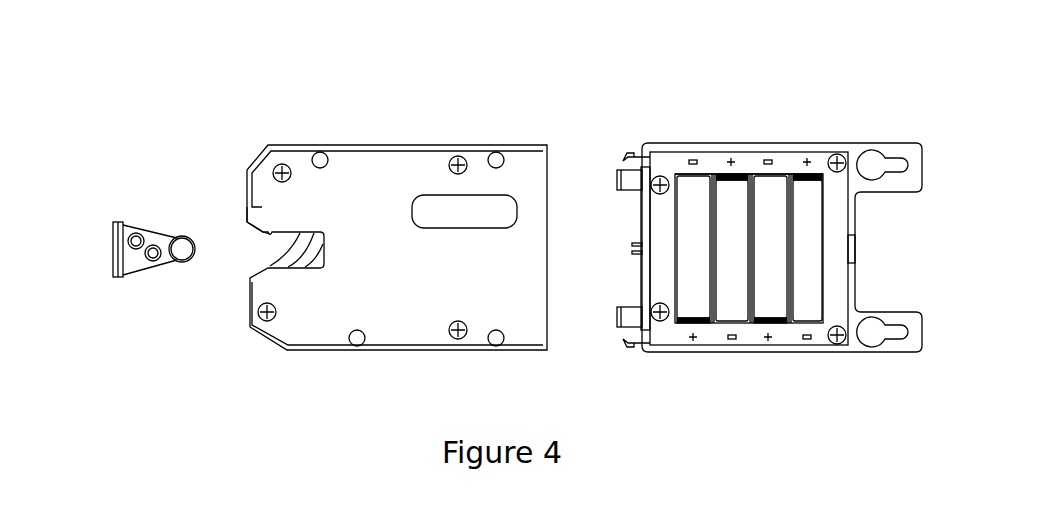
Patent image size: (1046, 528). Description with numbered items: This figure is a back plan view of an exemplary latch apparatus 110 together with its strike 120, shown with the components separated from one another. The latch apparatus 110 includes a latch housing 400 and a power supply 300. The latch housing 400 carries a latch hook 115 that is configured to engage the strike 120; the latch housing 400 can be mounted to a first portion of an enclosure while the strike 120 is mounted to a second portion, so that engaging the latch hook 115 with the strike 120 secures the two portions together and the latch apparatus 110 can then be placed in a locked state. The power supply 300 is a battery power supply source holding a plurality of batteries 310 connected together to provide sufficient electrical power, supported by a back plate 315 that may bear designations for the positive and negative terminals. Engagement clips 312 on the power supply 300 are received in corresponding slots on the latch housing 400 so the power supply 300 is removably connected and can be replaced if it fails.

The latch apparatus 110 is at (545, 90).
The latch housing 400 is at (397, 144).
The latch hook 115 is at (266, 231).
The strike 120 is at (124, 222).
The power supply 300 is at (809, 148).
The back plate 315 is at (711, 158).
The engagement clips 312 is at (626, 150).
The batteries 310 is at (801, 312).